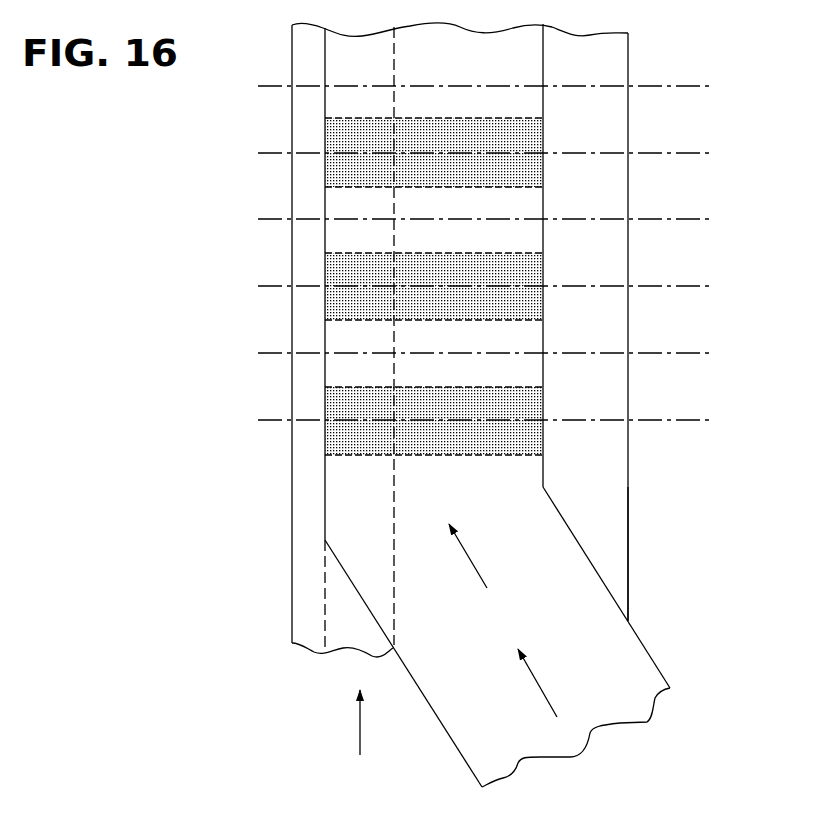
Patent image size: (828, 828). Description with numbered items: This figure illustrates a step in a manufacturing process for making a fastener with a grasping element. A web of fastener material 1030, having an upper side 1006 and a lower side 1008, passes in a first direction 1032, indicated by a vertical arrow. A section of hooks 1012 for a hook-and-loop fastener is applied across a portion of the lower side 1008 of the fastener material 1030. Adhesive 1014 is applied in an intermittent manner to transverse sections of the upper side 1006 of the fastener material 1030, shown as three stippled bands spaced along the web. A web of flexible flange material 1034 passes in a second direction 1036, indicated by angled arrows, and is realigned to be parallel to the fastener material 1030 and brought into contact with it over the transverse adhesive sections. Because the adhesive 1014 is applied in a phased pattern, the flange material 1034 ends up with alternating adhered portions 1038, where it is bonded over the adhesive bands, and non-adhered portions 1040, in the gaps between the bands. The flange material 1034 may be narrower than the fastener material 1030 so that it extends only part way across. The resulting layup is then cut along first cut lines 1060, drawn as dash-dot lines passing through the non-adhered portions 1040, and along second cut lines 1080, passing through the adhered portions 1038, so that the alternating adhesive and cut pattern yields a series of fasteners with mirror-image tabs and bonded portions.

The upper side 1006 is at (608, 460).
The lower side 1008 is at (633, 577).
The section of hooks 1012 is at (342, 592).
The adhesive 1014 is at (352, 125).
The web of fastener material 1030 is at (608, 508).
The first direction 1032 is at (358, 728).
The web of flexible flange material 1034 is at (635, 674).
The second direction 1036 is at (543, 697).
The adhered portions 1038 is at (342, 137).
The non-adhered portions 1040 is at (338, 203).
The first cut lines 1060 is at (697, 153).
The second cut lines 1080 is at (697, 85).